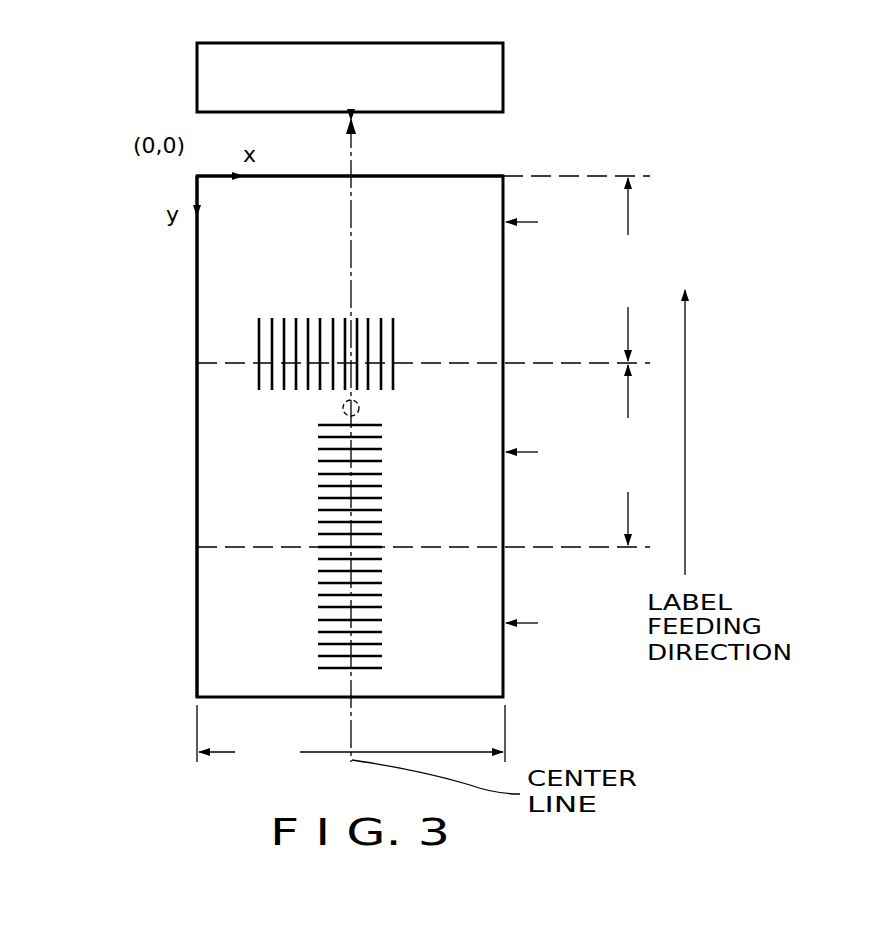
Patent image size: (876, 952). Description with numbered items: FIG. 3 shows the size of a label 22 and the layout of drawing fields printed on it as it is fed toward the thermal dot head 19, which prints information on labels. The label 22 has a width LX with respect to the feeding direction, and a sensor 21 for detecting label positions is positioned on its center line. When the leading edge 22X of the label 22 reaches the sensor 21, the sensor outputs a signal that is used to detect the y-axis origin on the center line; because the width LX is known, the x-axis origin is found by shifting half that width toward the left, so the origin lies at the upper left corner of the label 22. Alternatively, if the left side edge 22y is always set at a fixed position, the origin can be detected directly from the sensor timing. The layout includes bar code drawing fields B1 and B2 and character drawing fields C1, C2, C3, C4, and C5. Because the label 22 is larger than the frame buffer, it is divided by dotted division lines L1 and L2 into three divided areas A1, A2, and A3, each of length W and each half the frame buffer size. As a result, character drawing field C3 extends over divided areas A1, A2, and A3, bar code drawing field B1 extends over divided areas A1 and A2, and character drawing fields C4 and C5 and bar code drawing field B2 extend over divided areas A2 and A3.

The thermal dot head 19 is at (503, 72).
The label 22 is at (218, 470).
The leading edge of label 22X is at (432, 176).
The left side edge of label 22y is at (197, 382).
The sensor 21 is at (342, 408).
The character drawing field C1 is at (212, 242).
The character drawing field C2 is at (214, 282).
The character drawing field C3 is at (493, 276).
The character drawing field C4 is at (428, 680).
The character drawing field C5 is at (210, 616).
The bar code drawing field B1 is at (250, 346).
The bar code drawing field B2 is at (317, 462).
The divided area A1 is at (538, 222).
The divided area A2 is at (538, 452).
The divided area A3 is at (538, 623).
The division line L1 is at (520, 363).
The division line L2 is at (520, 547).
The length of divided area W is at (628, 361).
The label width LX is at (351, 735).